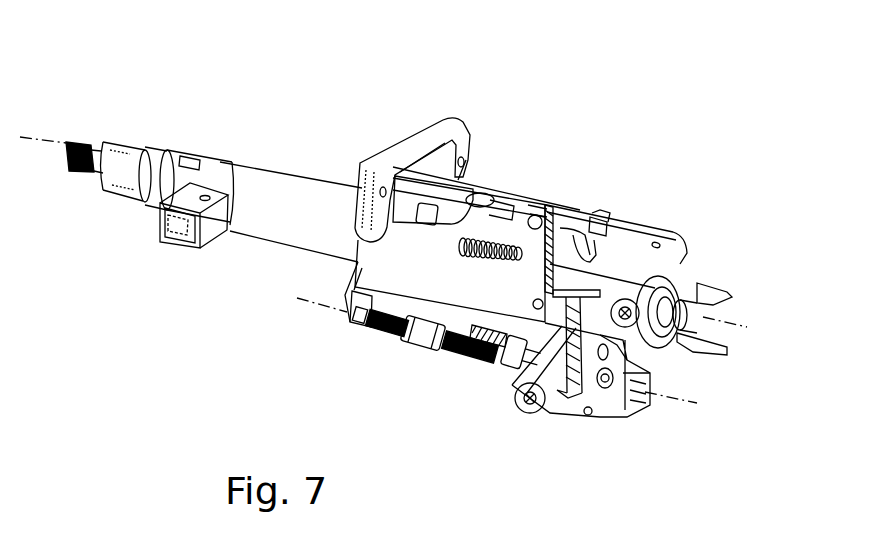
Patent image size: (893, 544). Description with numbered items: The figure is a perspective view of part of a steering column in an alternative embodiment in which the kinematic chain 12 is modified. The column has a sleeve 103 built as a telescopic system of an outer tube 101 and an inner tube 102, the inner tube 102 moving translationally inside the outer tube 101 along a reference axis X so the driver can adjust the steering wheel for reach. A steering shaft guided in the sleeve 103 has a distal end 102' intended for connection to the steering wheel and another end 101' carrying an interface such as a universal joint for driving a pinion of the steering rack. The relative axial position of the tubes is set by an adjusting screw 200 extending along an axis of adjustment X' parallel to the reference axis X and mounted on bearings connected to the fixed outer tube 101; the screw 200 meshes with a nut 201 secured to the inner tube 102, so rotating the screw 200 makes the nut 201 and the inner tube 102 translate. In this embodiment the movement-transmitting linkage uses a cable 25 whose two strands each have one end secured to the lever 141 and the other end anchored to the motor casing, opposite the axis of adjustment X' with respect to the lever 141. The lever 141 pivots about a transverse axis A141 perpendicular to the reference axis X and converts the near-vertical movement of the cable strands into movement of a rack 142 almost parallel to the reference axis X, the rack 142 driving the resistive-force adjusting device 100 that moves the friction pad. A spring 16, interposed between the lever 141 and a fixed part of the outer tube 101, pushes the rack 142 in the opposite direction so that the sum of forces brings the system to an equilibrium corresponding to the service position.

The distal end 102' is at (92, 110).
The inner tube 102 is at (190, 156).
The sleeve 103 is at (317, 118).
The resistive-force adjusting device 100 is at (422, 168).
The rack 142 is at (452, 197).
The spring 16 is at (546, 198).
The kinematic chain 12 is at (549, 204).
The lever 141 is at (540, 258).
The end of the shaft 101' is at (687, 280).
The outer tube 101 is at (390, 260).
The adjusting screw 200 is at (374, 331).
The nut 201 is at (423, 343).
The transverse axis A141 is at (535, 306).
The cable 25 is at (560, 327).
The reference axis X is at (401, 233).
The axis of adjustment X' is at (497, 388).